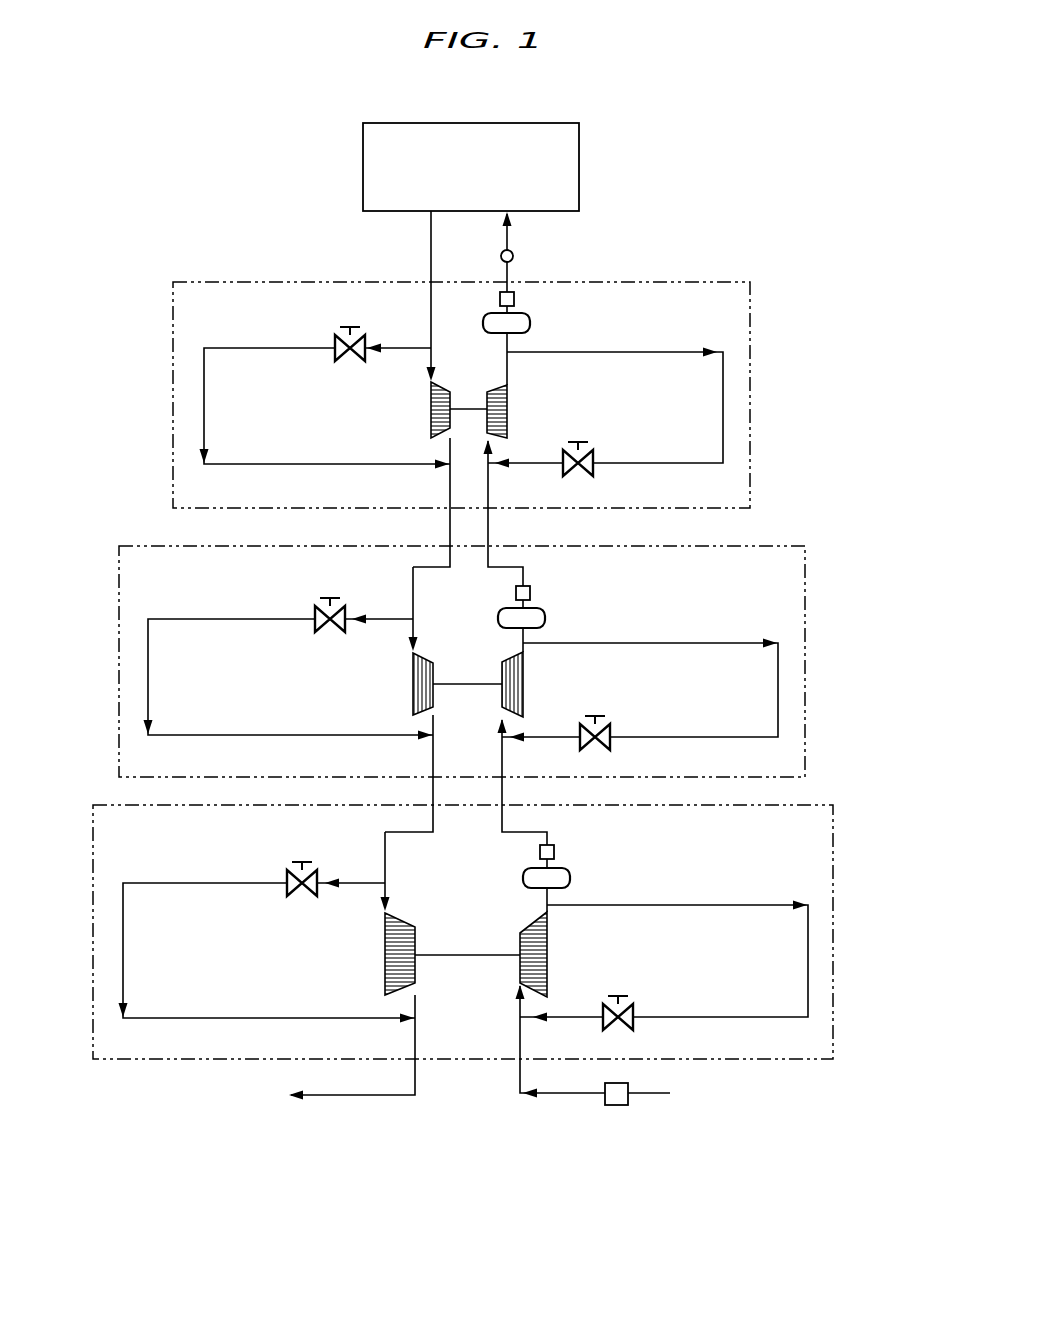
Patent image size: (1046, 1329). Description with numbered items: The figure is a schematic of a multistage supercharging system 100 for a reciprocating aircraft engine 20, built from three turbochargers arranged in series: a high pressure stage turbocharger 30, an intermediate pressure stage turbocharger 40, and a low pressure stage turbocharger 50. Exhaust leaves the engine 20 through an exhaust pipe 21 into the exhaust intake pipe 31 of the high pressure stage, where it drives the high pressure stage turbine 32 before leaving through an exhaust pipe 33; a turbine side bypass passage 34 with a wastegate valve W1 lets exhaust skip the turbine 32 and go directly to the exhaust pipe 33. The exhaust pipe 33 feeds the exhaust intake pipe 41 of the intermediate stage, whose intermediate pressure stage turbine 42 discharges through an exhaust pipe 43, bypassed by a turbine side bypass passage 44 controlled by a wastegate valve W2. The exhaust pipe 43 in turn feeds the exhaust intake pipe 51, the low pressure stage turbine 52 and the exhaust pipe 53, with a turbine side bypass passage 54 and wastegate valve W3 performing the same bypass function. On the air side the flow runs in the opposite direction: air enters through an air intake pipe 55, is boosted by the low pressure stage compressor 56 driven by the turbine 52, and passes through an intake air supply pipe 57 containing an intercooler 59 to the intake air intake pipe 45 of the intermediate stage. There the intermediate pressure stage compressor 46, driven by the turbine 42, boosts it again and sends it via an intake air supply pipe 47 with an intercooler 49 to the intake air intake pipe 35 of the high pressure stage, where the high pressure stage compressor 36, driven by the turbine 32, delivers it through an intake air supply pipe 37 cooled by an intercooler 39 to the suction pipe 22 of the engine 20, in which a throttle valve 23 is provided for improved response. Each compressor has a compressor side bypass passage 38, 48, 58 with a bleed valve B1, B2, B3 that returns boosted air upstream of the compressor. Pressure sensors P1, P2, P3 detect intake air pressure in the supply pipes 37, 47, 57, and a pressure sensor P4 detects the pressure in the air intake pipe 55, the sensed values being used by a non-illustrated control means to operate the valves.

The multistage supercharging system 100 is at (238, 233).
The engine 20 is at (590, 144).
The exhaust pipe 21 is at (430, 240).
The suction pipe 22 is at (512, 240).
The throttle valve 23 is at (514, 257).
The high pressure stage turbocharger 30 is at (759, 294).
The exhaust intake pipe 31 is at (432, 301).
The high pressure stage turbine 32 is at (431, 386).
The exhaust pipe 33 is at (450, 498).
The turbine side bypass passage 34 is at (204, 413).
The intake air intake pipe 35 is at (489, 526).
The high pressure stage compressor 36 is at (500, 387).
The intake air supply pipe 37 is at (505, 348).
The compressor side bypass passage 38 is at (723, 410).
The intercooler 39 is at (483, 323).
The intermediate pressure stage turbocharger 40 is at (814, 565).
The exhaust intake pipe 41 is at (414, 601).
The intermediate pressure stage turbine 42 is at (413, 662).
The exhaust pipe 43 is at (433, 762).
The turbine side bypass passage 44 is at (148, 682).
The intake air intake pipe 45 is at (503, 790).
The intermediate pressure stage compressor 46 is at (525, 658).
The intake air supply pipe 47 is at (522, 637).
The compressor side bypass passage 48 is at (778, 697).
The intercooler 49 is at (498, 618).
The low pressure stage turbocharger 50 is at (842, 819).
The exhaust intake pipe 51 is at (388, 855).
The low pressure stage turbine 52 is at (385, 925).
The exhaust pipe 53 is at (415, 1048).
The turbine side bypass passage 54 is at (123, 955).
The air intake pipe 55 is at (521, 1082).
The low pressure stage compressor 56 is at (548, 916).
The intake air supply pipe 57 is at (545, 897).
The compressor side bypass passage 58 is at (808, 948).
The intercooler 59 is at (523, 878).
The pressure sensor P1 is at (514, 299).
The pressure sensor P2 is at (530, 593).
The pressure sensor P3 is at (554, 852).
The pressure sensor P4 is at (614, 1107).
The wastegate valve W1 is at (336, 358).
The wastegate valve W2 is at (318, 630).
The wastegate valve W3 is at (290, 891).
The bleed valve B1 is at (592, 456).
The bleed valve B2 is at (610, 729).
The bleed valve B3 is at (632, 1010).